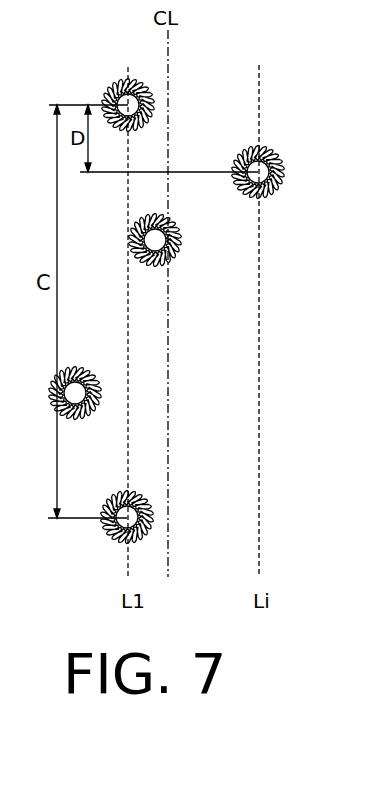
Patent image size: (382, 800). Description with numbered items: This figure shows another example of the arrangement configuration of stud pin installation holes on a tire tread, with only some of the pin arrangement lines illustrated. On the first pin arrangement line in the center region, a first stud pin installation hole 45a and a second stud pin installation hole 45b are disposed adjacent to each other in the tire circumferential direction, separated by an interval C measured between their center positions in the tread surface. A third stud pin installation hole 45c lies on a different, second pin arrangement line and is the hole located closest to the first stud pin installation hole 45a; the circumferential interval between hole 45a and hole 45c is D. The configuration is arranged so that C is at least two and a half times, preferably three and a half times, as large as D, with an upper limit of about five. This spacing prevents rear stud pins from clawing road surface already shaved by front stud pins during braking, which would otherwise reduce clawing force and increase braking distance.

The first stud pin installation hole 45a is at (112, 90).
The second stud pin installation hole 45b is at (108, 539).
The third stud pin installation hole 45c is at (277, 150).